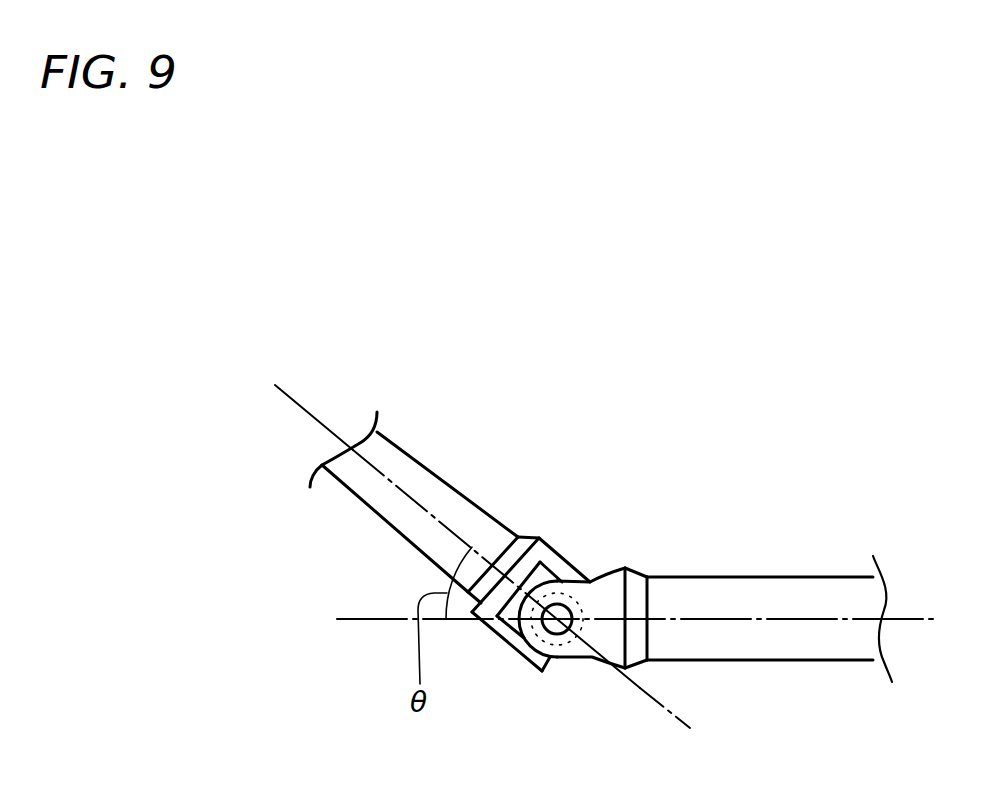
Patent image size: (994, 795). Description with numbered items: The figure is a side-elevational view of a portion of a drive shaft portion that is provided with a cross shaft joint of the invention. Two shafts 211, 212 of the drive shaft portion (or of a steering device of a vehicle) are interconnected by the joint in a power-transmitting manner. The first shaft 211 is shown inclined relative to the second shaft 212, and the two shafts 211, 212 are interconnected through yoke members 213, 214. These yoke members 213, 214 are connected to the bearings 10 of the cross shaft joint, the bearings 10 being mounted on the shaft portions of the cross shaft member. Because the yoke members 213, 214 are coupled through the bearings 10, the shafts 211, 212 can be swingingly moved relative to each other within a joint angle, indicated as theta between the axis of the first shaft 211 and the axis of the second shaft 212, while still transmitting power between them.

The shaft 211 is at (413, 472).
The shaft 212 is at (737, 588).
The yoke member 213 is at (560, 563).
The yoke member 214 is at (575, 653).
The bearing 10 is at (535, 648).